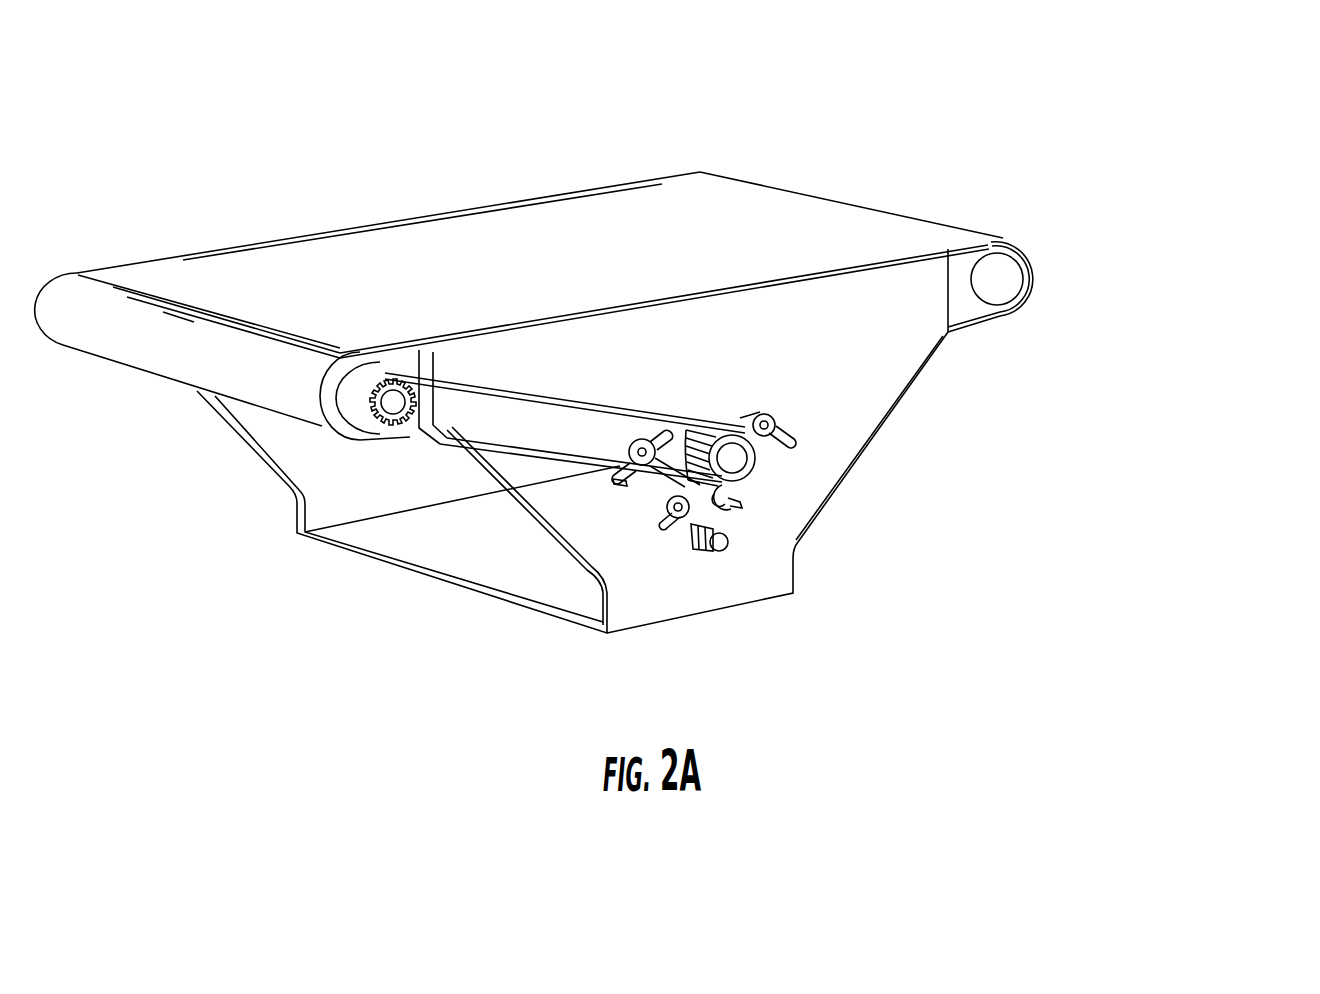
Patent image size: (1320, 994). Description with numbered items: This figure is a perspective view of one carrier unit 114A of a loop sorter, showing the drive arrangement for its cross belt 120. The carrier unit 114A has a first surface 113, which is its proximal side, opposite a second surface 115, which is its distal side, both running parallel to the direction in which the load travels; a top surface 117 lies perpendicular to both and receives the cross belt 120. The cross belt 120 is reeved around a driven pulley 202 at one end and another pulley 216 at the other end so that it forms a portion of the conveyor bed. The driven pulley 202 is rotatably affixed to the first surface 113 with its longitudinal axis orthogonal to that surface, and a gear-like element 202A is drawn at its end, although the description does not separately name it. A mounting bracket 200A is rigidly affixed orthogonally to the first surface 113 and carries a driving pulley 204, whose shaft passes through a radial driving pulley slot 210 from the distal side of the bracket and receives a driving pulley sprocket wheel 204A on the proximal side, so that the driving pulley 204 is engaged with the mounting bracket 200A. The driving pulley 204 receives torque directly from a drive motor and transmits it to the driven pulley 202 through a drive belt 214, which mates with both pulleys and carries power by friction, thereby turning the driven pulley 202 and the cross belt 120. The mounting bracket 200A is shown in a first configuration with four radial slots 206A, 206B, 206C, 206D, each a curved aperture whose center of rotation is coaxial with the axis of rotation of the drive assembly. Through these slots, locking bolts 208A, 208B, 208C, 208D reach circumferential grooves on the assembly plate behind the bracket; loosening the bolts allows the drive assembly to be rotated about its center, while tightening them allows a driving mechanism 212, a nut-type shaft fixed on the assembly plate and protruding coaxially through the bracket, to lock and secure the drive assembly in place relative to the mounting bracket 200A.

The carrier unit 114A is at (1205, 181).
The second surface 115 is at (131, 257).
The top surface 117 is at (677, 183).
The cross belt 120 is at (802, 214).
The first surface 113 is at (957, 278).
The pulley 216 is at (1003, 287).
The mounting bracket 200A is at (808, 475).
The driven pulley 202 is at (352, 374).
The drive gear 202A is at (392, 403).
The drive belt 214 is at (553, 390).
The radial driving pulley slot 210 is at (676, 450).
The driving pulley 204 is at (733, 454).
The driving pulley sprocket wheel 204A is at (700, 474).
The locking bolt 208A is at (617, 444).
The locking bolt 208B is at (782, 417).
The locking bolt 208C is at (666, 500).
The locking bolt 208D is at (734, 508).
The radial slot 206A is at (612, 492).
The radial slot 206B is at (792, 443).
The radial slot 206C is at (642, 523).
The radial slot 206D is at (742, 498).
The driving mechanism 212 is at (729, 552).